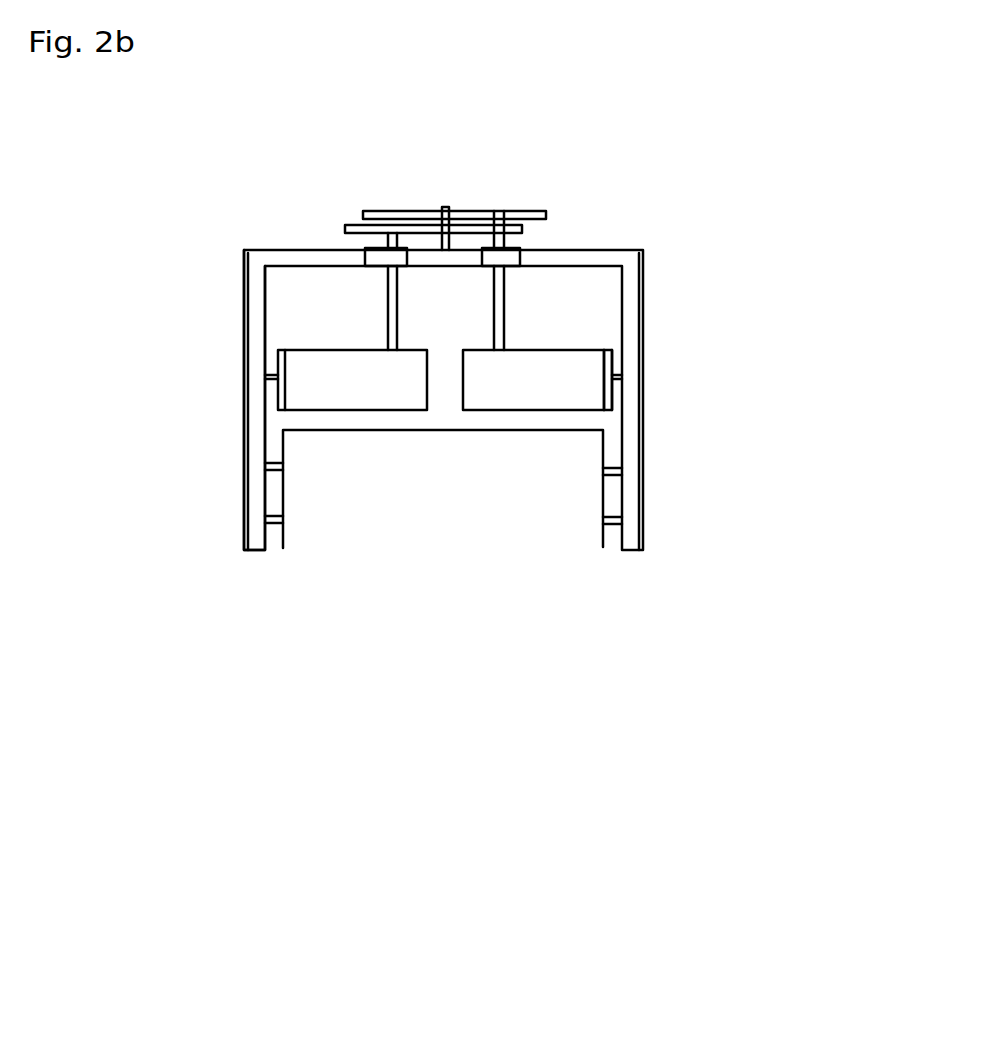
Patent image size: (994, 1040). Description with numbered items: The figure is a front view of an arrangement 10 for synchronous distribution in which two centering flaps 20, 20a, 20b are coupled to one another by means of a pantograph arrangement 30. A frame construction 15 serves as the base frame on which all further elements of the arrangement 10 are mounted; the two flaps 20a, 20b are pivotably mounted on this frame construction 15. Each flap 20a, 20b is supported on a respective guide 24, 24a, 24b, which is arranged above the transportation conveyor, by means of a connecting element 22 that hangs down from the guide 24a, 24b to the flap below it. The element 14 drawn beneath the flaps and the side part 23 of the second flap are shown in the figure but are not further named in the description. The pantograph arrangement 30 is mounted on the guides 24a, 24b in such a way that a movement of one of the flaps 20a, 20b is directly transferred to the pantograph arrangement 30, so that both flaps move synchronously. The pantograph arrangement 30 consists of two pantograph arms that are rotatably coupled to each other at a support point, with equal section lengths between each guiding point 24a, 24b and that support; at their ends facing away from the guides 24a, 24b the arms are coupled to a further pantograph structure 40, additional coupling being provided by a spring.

The arrangement 10 is at (428, 906).
The sample holder / specimen box 14 is at (453, 502).
The frame construction 15 is at (252, 487).
The flaps 20 is at (443, 380).
The centering flap 20a is at (403, 395).
The centering flap 20b is at (588, 395).
The connecting element 22 is at (497, 333).
The side plate of sensor unit 23 is at (612, 382).
The guide 24 is at (520, 225).
The guide 24a is at (393, 250).
The guide 24b is at (512, 250).
The pantograph arrangement 30 is at (567, 193).
The pantograph structure 40 is at (577, 194).